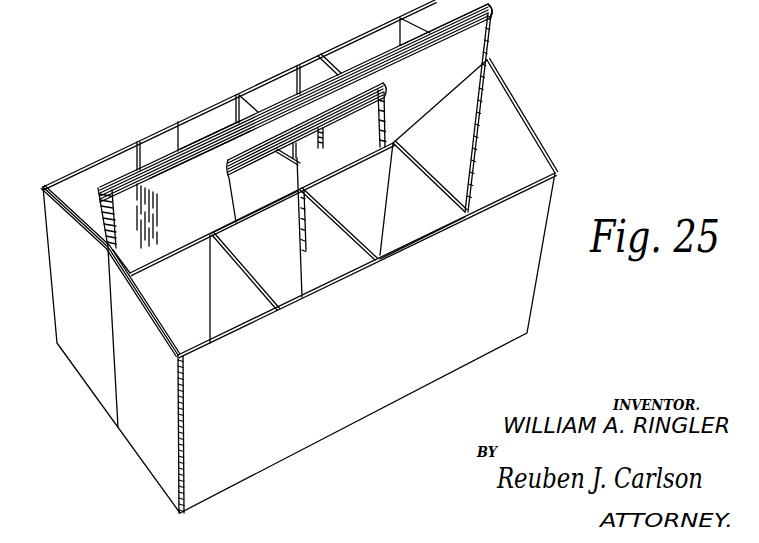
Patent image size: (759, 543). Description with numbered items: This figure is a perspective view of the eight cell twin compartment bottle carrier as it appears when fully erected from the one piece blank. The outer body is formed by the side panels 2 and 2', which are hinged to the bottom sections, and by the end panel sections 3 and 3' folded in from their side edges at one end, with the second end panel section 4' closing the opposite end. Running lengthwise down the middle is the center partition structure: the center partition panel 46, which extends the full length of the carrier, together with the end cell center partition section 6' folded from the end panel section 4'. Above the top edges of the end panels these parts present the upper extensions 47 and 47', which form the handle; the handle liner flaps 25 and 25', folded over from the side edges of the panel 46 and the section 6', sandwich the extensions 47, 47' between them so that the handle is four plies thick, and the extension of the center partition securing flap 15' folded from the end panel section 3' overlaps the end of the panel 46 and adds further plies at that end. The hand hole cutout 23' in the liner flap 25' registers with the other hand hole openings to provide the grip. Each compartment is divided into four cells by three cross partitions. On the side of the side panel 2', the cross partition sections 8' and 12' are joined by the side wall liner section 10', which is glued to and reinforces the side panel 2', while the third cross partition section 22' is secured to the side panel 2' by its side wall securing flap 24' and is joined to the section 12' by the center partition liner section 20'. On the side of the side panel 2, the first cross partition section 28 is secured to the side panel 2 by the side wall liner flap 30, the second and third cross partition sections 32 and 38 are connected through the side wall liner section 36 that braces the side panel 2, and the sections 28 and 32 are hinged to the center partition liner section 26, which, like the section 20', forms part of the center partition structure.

The side panel 2 is at (223, 95).
The side panel 2' is at (367, 343).
The end panel section 3 is at (110, 350).
The end panel section 3' is at (146, 380).
The end panel section 4' is at (524, 116).
The end cell center partition section 6' is at (460, 112).
The cross partition section 8' is at (423, 198).
The side wall liner section 10' is at (422, 234).
The cross partition section 12' is at (337, 227).
The center partition securing flap 15' is at (149, 270).
The center partition liner section 20' is at (255, 219).
The cross partition section 22' is at (253, 271).
The hand hole cutout 23' is at (261, 165).
The side wall securing flap 24' is at (232, 289).
The handle liner flap 25 is at (294, 103).
The handle liner flap 25' is at (469, 28).
The center partition liner section 26 is at (332, 152).
The cross partition section 28 is at (337, 57).
The side wall liner flap 30 is at (307, 70).
The cross partition section 32 is at (250, 97).
The side wall liner section 36 is at (178, 133).
The cross partition section 38 is at (136, 160).
The center partition panel 46 is at (366, 187).
The upper extension 47 is at (210, 104).
The upper extension 47' is at (200, 156).